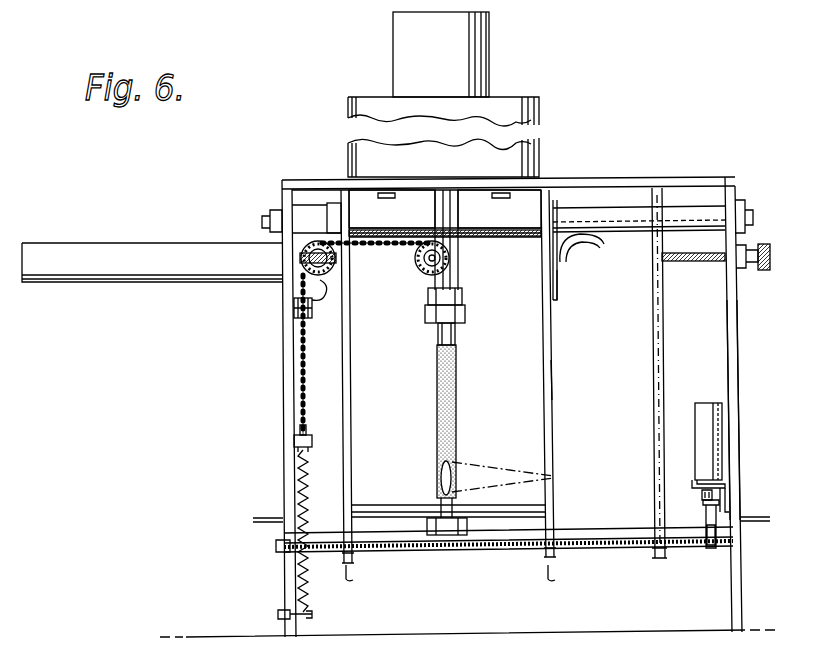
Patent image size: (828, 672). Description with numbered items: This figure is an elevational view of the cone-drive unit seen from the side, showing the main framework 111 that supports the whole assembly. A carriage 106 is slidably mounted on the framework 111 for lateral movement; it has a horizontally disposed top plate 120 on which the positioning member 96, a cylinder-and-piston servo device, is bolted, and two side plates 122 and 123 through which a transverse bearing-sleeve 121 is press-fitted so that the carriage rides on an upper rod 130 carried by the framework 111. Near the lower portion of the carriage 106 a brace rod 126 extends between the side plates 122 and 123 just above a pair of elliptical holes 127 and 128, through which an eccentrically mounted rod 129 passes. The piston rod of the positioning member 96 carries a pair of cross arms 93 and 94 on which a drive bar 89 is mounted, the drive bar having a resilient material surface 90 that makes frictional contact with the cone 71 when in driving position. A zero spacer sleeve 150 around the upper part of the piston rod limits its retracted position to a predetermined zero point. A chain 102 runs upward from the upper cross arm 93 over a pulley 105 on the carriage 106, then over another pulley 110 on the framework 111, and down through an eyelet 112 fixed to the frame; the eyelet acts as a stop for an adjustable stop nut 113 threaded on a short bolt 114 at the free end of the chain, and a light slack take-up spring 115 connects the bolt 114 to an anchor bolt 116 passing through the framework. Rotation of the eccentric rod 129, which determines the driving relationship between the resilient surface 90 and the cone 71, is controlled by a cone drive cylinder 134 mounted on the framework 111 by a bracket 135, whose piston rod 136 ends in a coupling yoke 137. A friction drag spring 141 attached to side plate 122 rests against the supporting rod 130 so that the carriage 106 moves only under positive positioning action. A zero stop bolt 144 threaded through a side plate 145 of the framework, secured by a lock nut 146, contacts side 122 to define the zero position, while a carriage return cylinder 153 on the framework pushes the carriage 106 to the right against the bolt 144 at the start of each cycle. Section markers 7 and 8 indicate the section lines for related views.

The section line 7- 7 is at (470, 160).
The section line 8- 8 is at (739, 610).
The cone 71 is at (488, 464).
The drive bar 89 is at (455, 343).
The resilient material surface 90 is at (456, 392).
The cross arm 93 is at (465, 314).
The cross arm 94 is at (467, 526).
The positioning member 96 is at (348, 148).
The chain 102 is at (378, 247).
The pulley 105 is at (420, 273).
The carriage 106 is at (560, 384).
The pulley 110 is at (330, 296).
The framework 111 is at (283, 338).
The eyelet 112 is at (312, 316).
The adjustable stop nut 113 is at (294, 443).
The short bolt 114 is at (300, 429).
The slack take-up spring 115 is at (295, 486).
The anchor bolt 116 is at (312, 614).
The top plate 120 is at (491, 188).
The transverse bearing-sleeve 121 is at (499, 211).
The side plate 122 is at (552, 348).
The side plate 123 is at (351, 372).
The brace rod 126 is at (387, 503).
The elliptical hole 127 is at (369, 577).
The elliptical hole 128 is at (570, 575).
The eccentrically mounted rod 129 is at (594, 530).
The upper rod 130 is at (602, 209).
The cone drive cylinder 134 is at (714, 447).
The bracket 135 is at (728, 497).
The piston rod 136 is at (702, 495).
The coupling yoke 137 is at (700, 520).
The friction drag spring 141 is at (572, 246).
The zero stop bolt 144 is at (686, 262).
The side plate 145 is at (738, 303).
The lock nut 146 is at (743, 246).
The zero spacer sleeve 150 is at (435, 210).
The carriage return cylinder 153 is at (152, 262).